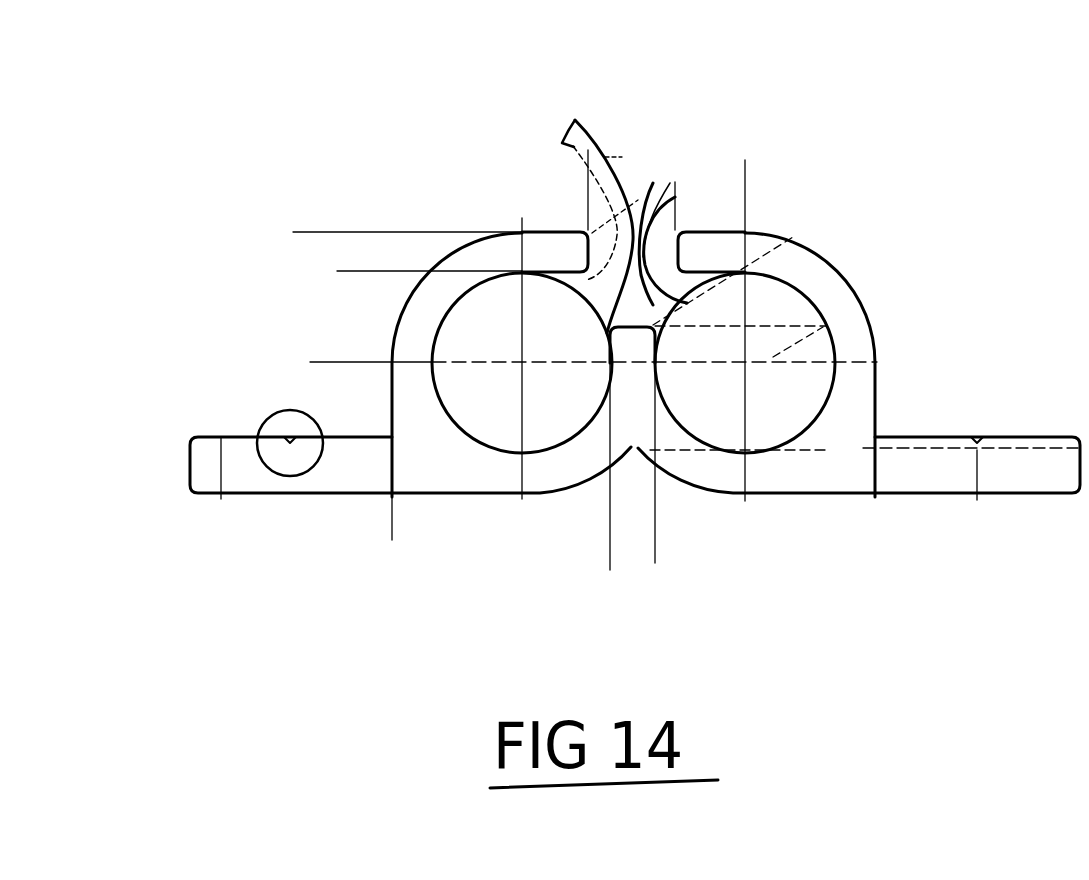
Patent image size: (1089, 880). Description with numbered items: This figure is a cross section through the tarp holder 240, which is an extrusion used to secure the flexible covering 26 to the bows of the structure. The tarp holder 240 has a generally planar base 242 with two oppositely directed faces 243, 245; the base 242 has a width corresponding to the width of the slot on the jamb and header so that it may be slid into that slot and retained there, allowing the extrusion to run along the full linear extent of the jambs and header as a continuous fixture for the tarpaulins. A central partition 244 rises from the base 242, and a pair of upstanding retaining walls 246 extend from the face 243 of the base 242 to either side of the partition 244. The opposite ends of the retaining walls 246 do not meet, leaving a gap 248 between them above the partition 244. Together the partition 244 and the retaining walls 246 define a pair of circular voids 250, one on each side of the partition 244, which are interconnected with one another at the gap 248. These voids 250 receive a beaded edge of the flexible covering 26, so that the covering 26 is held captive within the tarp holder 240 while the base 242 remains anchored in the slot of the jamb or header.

The flexible covering 26 is at (598, 137).
The tarp holder 240 is at (925, 257).
The base 242 is at (357, 470).
The face 243 is at (390, 392).
The central partition 244 is at (632, 368).
The face 245 is at (877, 398).
The retaining walls 246 is at (453, 277).
The gap 248 is at (668, 208).
The circular voids 250 is at (633, 363).